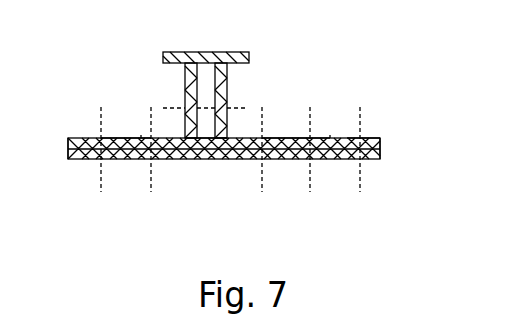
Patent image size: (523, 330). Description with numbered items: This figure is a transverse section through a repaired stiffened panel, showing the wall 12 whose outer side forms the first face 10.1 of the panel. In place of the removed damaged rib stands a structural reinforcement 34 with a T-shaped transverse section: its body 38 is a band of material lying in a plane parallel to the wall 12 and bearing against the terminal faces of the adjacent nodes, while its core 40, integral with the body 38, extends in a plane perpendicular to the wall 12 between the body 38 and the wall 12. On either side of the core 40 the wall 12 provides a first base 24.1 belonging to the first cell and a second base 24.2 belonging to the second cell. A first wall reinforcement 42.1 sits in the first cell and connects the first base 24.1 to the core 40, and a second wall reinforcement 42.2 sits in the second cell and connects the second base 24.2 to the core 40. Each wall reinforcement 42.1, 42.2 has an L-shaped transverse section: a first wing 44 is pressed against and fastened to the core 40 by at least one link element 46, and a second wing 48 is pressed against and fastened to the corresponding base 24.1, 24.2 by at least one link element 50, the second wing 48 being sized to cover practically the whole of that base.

The first face 10.1 is at (379, 160).
The wall 12 is at (340, 168).
The first base 24.1 is at (66, 172).
The second base 24.2 is at (347, 138).
The structural reinforcement 34 is at (209, 74).
The body 38 is at (205, 52).
The core 40 is at (228, 96).
The first wall reinforcement 42.1 is at (118, 122).
The second wall reinforcement 42.2 is at (300, 123).
The first wing 44 is at (185, 74).
The link element 46 is at (219, 160).
The second wing 48 is at (141, 135).
The link element 50 is at (101, 178).